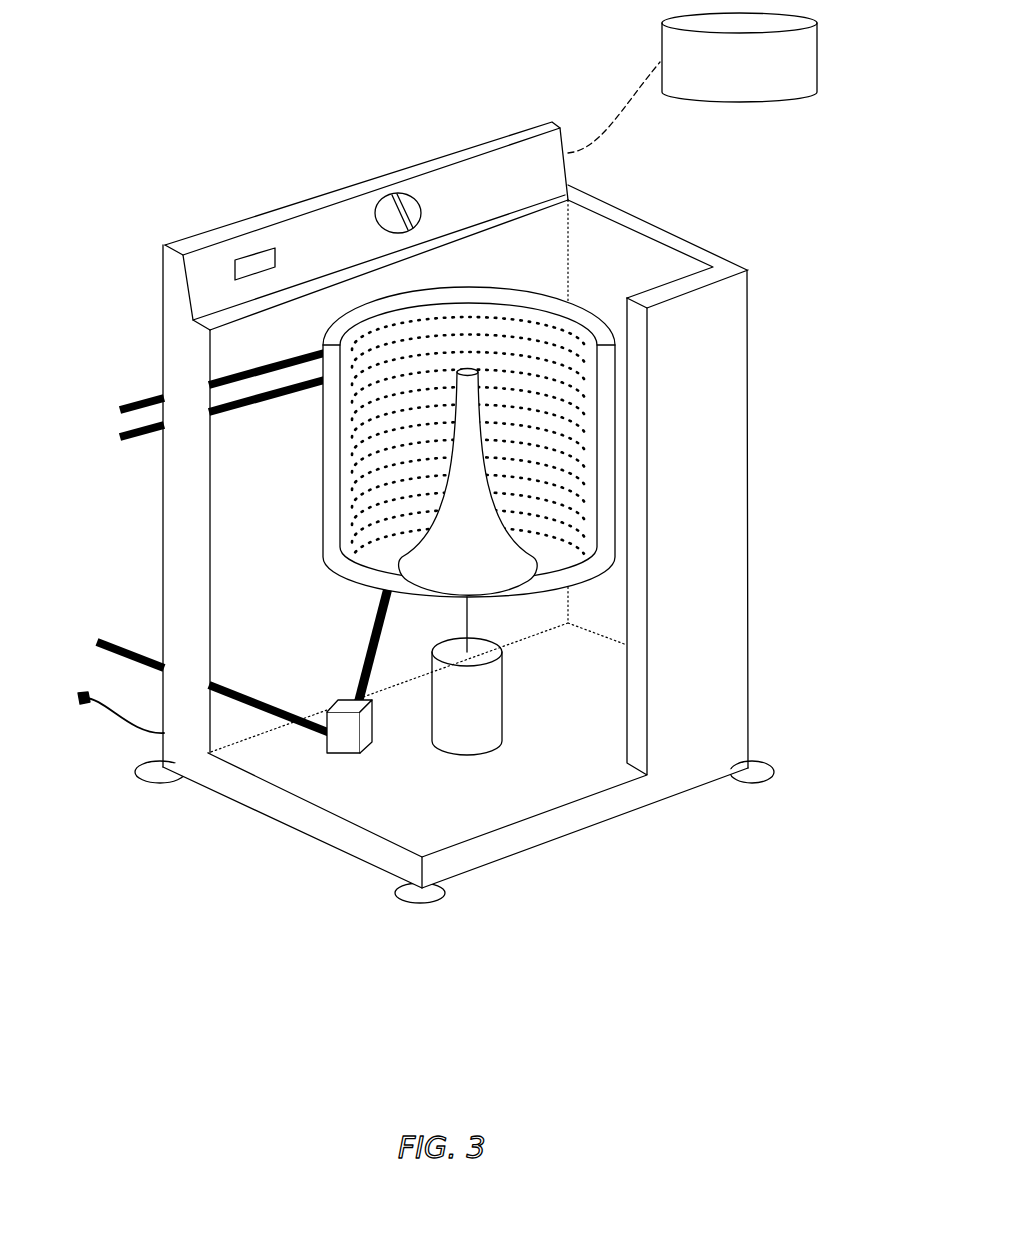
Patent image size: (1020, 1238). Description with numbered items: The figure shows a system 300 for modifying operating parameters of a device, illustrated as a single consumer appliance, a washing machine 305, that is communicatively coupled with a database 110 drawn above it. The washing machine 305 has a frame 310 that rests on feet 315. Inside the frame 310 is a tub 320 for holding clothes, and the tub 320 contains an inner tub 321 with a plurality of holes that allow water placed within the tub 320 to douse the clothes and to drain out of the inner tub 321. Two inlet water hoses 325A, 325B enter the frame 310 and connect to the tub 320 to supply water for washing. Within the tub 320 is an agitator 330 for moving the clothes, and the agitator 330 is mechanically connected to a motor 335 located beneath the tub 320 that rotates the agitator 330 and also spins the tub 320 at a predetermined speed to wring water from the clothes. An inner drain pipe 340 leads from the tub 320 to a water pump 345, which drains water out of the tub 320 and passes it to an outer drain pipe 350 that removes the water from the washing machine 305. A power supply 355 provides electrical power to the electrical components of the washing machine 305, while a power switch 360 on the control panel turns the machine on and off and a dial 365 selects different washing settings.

The system 300 is at (160, 46).
The washing machine 305 is at (275, 827).
The frame 310 is at (750, 572).
The feet 315 is at (151, 783).
The tub 320 is at (324, 512).
The inner tub 321 is at (345, 442).
The inlet water hose 325A is at (132, 396).
The inlet water hose 325B is at (132, 432).
The agitator 330 is at (483, 596).
The motor 335 is at (468, 756).
The inner drain pipe 340 is at (362, 658).
The water pump 345 is at (345, 756).
The outer drain pipe 350 is at (110, 643).
The power supply 355 is at (120, 724).
The power switch 360 is at (258, 251).
The dial 365 is at (408, 194).
The database 110 is at (692, 83).